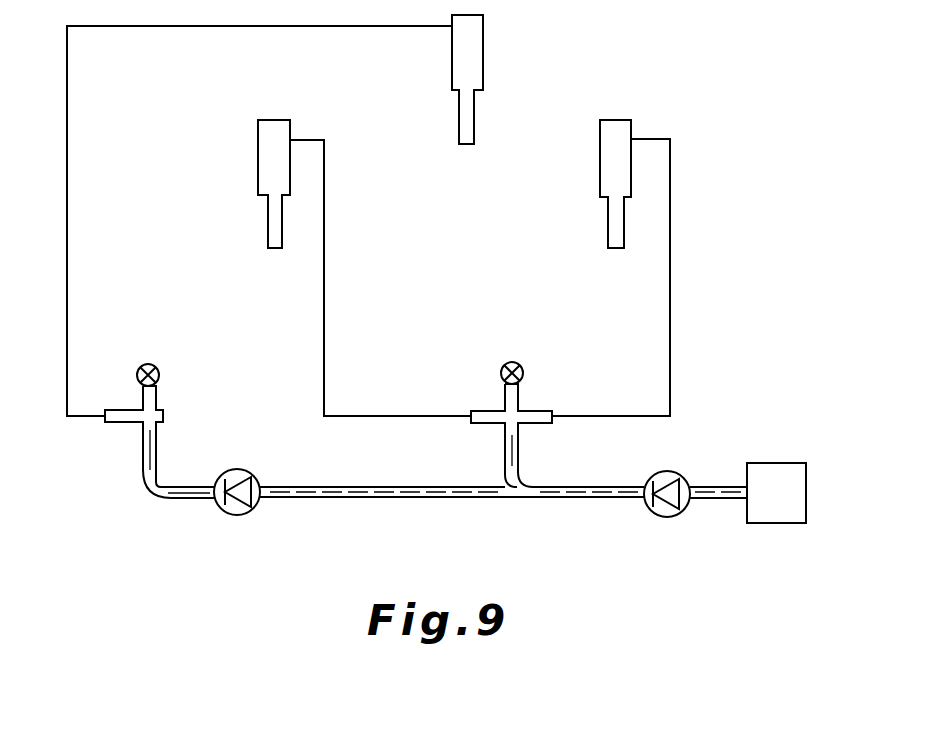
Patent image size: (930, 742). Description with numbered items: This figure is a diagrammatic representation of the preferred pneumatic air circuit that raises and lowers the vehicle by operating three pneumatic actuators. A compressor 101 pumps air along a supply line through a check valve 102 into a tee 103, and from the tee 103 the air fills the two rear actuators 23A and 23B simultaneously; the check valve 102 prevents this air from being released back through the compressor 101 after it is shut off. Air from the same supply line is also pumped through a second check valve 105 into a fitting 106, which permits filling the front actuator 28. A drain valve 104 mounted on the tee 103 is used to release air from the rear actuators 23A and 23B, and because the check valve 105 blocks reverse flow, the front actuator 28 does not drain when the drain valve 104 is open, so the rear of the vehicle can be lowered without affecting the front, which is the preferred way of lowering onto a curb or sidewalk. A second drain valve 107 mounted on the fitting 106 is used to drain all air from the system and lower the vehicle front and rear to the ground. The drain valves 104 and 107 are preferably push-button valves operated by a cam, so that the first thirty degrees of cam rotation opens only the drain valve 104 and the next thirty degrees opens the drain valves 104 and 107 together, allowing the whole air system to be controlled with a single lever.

The front actuator 28 is at (473, 42).
The rear actuator 23A is at (265, 165).
The rear actuator 23B is at (608, 138).
The compressor 101 is at (755, 463).
The check valve 102 is at (658, 475).
The tee 103 is at (512, 403).
The drain valve 104 is at (517, 363).
The check valve 105 is at (258, 480).
The fitting 106 is at (147, 402).
The drain valve 107 is at (152, 365).